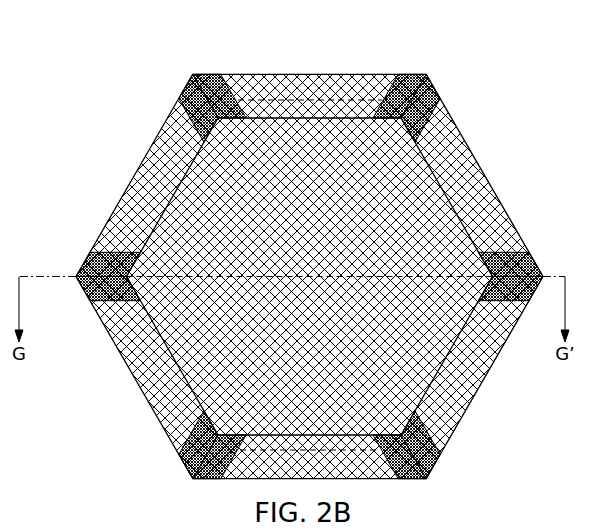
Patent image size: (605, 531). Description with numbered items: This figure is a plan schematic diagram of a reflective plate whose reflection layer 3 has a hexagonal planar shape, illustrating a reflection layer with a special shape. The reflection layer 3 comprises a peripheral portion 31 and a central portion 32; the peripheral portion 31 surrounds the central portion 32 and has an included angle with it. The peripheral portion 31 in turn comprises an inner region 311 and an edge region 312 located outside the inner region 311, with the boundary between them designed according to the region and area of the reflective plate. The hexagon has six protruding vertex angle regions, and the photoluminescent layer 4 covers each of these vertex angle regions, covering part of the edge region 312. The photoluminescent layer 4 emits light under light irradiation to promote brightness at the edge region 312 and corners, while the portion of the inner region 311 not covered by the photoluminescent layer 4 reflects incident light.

The reflection layer 3 is at (309, 244).
The peripheral portion 31 is at (309, 256).
The inner region 311 is at (308, 110).
The edge region 312 is at (337, 90).
The central portion 32 is at (273, 118).
The photoluminescent layer 4 is at (428, 94).